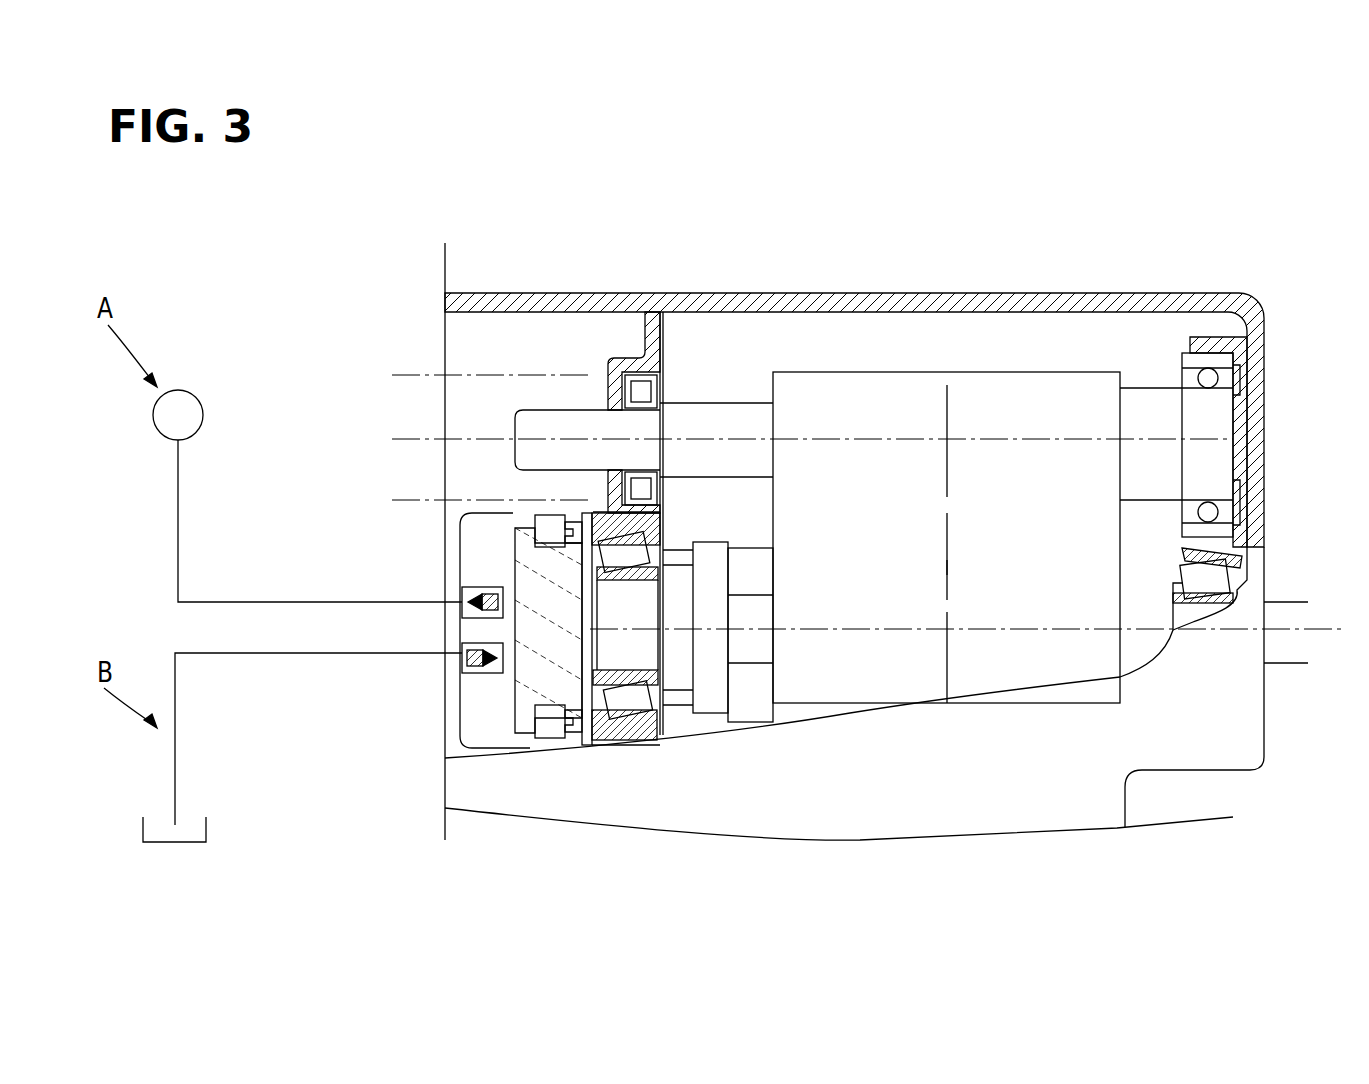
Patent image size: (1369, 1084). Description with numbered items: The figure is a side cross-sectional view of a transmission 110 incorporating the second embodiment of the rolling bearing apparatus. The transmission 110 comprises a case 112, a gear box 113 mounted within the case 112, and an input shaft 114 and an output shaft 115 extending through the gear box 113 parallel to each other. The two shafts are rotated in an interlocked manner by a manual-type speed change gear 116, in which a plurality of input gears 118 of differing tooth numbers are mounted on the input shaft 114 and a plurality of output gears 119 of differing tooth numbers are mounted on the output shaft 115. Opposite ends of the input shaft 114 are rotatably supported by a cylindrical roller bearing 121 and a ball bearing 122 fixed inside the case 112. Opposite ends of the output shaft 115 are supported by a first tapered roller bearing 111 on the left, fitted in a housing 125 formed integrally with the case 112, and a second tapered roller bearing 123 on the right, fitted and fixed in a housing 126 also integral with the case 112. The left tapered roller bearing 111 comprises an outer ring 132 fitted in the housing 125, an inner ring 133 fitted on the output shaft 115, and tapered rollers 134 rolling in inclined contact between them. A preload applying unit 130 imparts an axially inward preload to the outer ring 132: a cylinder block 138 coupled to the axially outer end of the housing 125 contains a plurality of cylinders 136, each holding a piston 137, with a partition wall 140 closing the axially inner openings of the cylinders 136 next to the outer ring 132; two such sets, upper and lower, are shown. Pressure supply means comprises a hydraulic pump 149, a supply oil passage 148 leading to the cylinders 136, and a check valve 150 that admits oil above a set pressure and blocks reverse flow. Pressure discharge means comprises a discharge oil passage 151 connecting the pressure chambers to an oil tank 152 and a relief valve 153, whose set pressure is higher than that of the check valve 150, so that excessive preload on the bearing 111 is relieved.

The transmission 110 is at (986, 254).
The tapered roller bearing 111 is at (653, 720).
The case 112 is at (1010, 295).
The gear box 113 is at (877, 372).
The input shaft 114 is at (548, 415).
The output shaft 115 is at (672, 690).
The speed change gear 116 is at (962, 656).
The input gears 118 is at (948, 468).
The output gears 119 is at (948, 567).
The cylindrical roller bearing 121 is at (670, 391).
The ball bearing 122 is at (1172, 371).
The tapered roller bearing 123 is at (1260, 593).
The housing 125 is at (600, 500).
The housing 126 is at (1248, 547).
The preload applying unit 130 is at (300, 360).
The outer ring 132 is at (640, 512).
The inner ring 133 is at (595, 735).
The tapered rollers 134 is at (728, 548).
The cylinders 136 is at (532, 518).
The pistons 137 is at (565, 546).
The cylinder block 138 is at (470, 745).
The partition wall 140 is at (580, 697).
The supply oil passage 148 is at (178, 484).
The hydraulic pump 149 is at (195, 395).
The check valve 150 is at (468, 590).
The discharge oil passage 151 is at (178, 757).
The oil tank 152 is at (206, 823).
The relief valve 153 is at (465, 675).